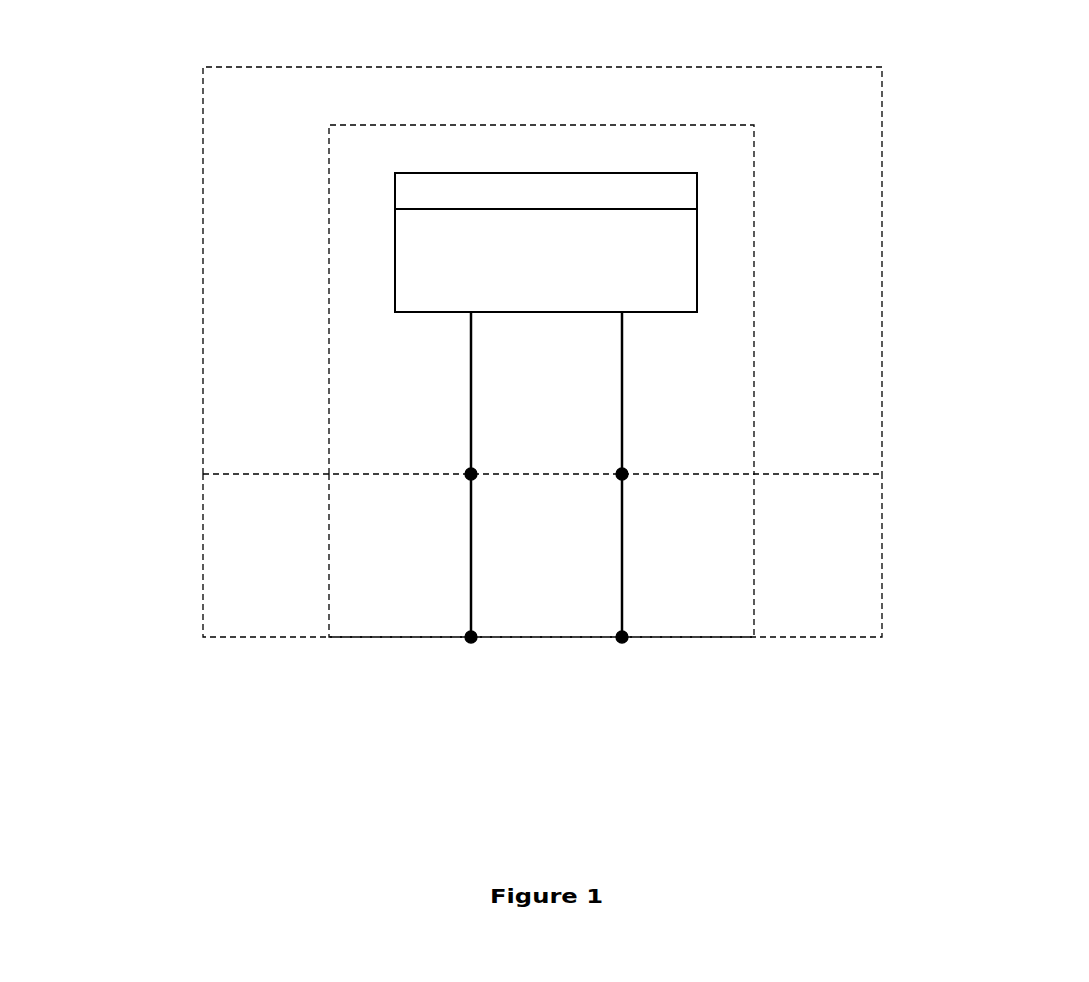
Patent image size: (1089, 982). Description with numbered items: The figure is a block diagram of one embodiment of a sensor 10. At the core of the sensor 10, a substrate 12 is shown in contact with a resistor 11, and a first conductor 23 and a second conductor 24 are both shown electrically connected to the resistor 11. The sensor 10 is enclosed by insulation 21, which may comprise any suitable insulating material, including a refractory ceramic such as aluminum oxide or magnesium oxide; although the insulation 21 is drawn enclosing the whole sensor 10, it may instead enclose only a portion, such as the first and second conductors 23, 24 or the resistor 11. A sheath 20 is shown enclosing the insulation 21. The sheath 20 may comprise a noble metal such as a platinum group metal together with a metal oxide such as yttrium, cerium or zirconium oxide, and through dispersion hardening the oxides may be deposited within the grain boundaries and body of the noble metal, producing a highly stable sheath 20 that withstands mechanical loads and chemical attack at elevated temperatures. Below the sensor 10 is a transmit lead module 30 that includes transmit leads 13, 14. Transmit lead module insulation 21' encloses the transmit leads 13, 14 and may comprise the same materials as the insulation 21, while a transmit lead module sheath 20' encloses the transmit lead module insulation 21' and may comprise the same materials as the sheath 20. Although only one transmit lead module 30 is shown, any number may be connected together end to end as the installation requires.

The sensor 10 is at (80, 103).
The resistor 11 is at (458, 314).
The substrate 12 is at (580, 173).
The transmit lead 13 is at (470, 548).
The transmit lead 14 is at (622, 537).
The sheath 20 is at (549, 270).
The transmit lead module sheath 20' is at (551, 555).
The insulation 21 is at (547, 299).
The transmit lead module insulation 21' is at (551, 555).
The first conductor 23 is at (472, 357).
The second conductor 24 is at (622, 357).
The transmit lead module 30 is at (1000, 531).